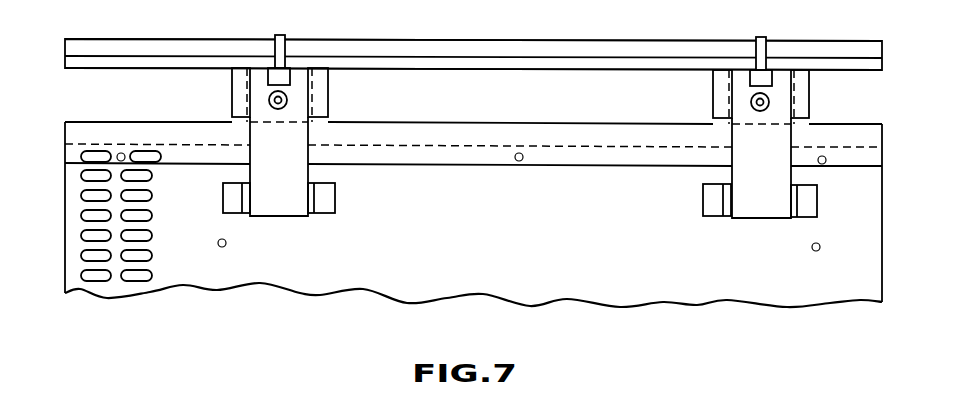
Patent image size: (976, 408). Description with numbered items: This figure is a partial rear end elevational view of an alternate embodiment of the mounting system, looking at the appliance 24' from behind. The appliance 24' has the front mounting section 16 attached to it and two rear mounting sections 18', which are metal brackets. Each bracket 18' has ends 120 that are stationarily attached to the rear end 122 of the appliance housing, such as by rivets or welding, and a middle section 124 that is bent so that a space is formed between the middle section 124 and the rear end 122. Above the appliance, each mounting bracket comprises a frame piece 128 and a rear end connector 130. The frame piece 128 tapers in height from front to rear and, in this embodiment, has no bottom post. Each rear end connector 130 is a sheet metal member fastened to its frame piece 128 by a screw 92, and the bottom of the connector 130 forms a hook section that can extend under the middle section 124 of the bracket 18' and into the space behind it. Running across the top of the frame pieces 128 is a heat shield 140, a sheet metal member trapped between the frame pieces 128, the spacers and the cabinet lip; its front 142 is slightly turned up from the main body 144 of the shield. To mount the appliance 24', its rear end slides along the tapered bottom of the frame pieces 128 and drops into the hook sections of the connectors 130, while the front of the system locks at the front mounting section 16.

The front mounting section 16 is at (83, 125).
The rear mounting section 18' is at (520, 196).
The appliance 24' is at (473, 311).
The screw 92 is at (288, 98).
The ends 120 is at (327, 217).
The rear end 122 is at (390, 288).
The middle section 124 is at (318, 182).
The frame piece 128 is at (253, 75).
The rear end connector 130 is at (250, 138).
The heat shield 140 is at (573, 39).
The front 142 is at (395, 38).
The main body 144 is at (460, 68).